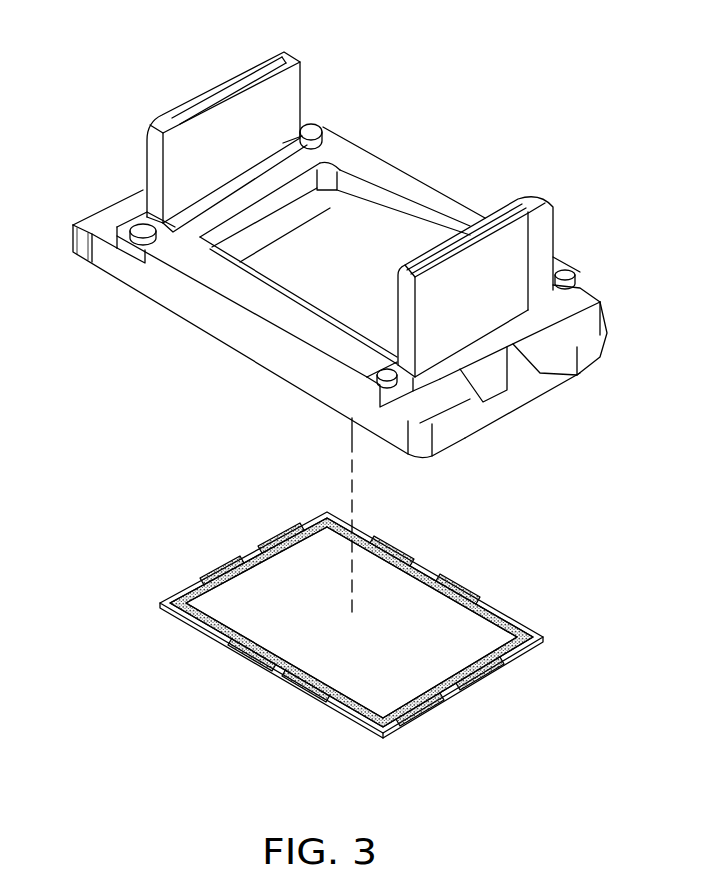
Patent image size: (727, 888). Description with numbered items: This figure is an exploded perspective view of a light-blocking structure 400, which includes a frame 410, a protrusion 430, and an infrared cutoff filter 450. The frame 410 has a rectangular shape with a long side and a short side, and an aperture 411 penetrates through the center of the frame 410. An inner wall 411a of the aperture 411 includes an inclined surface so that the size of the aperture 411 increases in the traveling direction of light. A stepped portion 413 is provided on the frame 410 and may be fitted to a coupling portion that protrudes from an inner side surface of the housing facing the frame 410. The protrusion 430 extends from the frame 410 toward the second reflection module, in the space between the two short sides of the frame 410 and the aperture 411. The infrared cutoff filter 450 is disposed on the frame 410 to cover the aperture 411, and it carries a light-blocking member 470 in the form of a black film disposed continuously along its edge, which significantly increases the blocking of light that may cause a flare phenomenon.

The light-blocking structure 400 is at (90, 23).
The frame 410 is at (148, 278).
The aperture 411 is at (367, 270).
The inner wall 411a is at (363, 187).
The stepped portion 413 is at (423, 380).
The protrusion 430 is at (290, 74).
The infrared cutoff filter 450 is at (530, 652).
The light-blocking member 470 is at (517, 617).